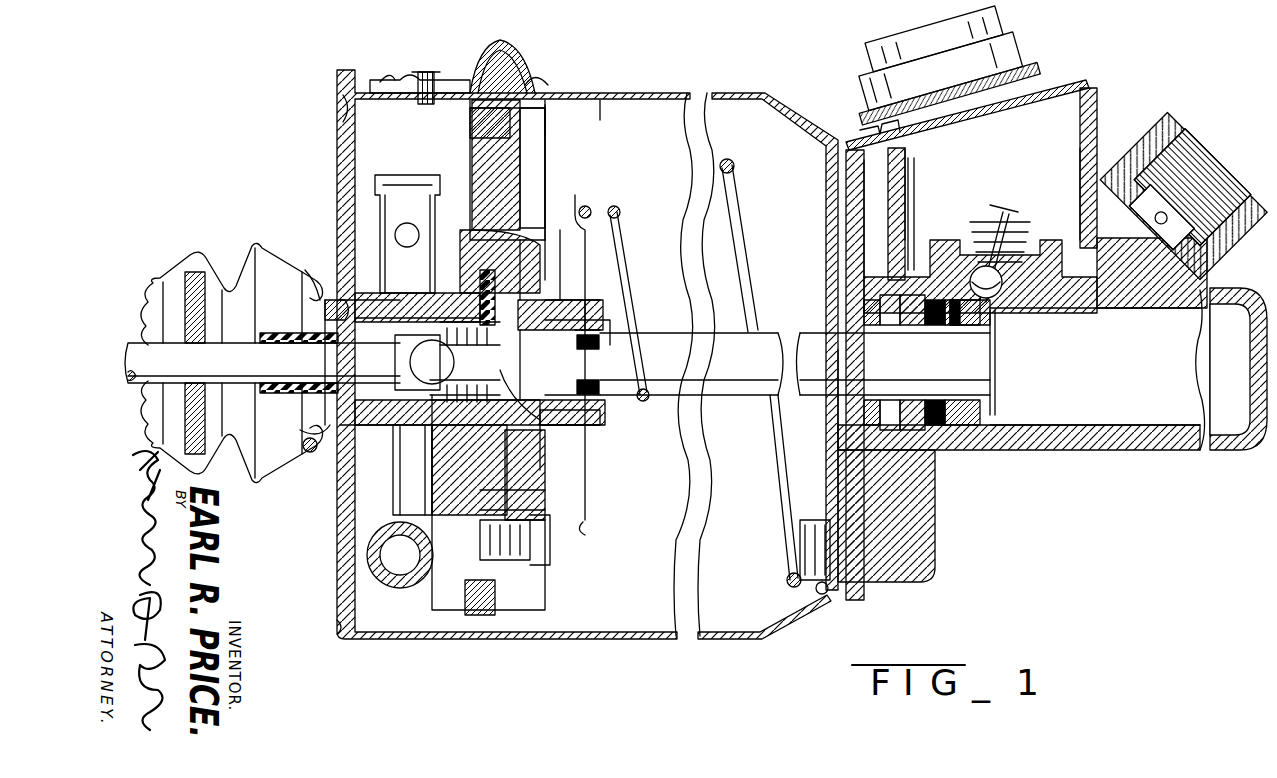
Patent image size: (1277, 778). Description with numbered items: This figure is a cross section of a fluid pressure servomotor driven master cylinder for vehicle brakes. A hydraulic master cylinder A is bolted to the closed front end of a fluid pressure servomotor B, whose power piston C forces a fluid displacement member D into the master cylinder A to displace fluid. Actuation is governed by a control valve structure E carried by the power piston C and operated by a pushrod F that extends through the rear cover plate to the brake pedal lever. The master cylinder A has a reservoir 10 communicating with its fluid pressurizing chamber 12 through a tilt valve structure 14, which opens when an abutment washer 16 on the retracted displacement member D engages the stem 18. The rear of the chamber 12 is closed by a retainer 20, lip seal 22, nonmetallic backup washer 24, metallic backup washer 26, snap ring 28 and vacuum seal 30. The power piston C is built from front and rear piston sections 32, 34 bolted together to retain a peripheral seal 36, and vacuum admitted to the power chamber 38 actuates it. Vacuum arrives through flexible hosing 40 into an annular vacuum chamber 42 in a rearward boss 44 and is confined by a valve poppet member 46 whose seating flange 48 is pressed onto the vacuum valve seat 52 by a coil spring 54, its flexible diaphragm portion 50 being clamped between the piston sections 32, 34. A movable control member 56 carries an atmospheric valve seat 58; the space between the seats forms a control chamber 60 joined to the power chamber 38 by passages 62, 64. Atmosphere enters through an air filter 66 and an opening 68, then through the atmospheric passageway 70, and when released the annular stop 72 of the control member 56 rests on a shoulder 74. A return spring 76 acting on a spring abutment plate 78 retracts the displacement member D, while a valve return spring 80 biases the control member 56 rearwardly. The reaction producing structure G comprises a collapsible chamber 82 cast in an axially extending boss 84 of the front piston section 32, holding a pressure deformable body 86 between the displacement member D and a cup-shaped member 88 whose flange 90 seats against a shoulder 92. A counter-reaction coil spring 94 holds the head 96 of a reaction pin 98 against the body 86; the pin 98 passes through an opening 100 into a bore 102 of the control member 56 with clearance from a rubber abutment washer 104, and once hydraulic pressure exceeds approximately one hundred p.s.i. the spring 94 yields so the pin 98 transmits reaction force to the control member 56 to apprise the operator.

The hydraulic master cylinder A is at (1108, 128).
The fluid pressure servomotor B is at (655, 92).
The power piston C is at (590, 100).
The fluid displacement member D is at (790, 310).
The control valve structure E is at (325, 462).
The pushrod F is at (128, 330).
The reaction producing structure G is at (600, 320).
The reservoir 10 is at (992, 184).
The fluid pressurizing chamber 12 is at (1128, 369).
The tilt valve structure 14 is at (990, 232).
The abutment washer 16 is at (985, 320).
The stem 18 is at (995, 310).
The retainer 20 is at (998, 405).
The lip seal 22 is at (905, 455).
The nonmetallic backup washer 24 is at (900, 465).
The metallic backup washer 26 is at (895, 475).
The snap ring 28 is at (885, 485).
The vacuum seal 30 is at (880, 495).
The front piston section 32 is at (548, 138).
The rear piston section 34 is at (468, 126).
The seal 36 is at (528, 90).
The power chamber 38 is at (632, 118).
The flexible hosing 40 is at (410, 585).
The annular vacuum chamber 42 is at (340, 290).
The boss 44 is at (350, 300).
The annular valve poppet member 46 is at (545, 420).
The seating flange 48 is at (400, 480).
The diaphragm portion 50 is at (545, 430).
The vacuum valve seat 52 is at (425, 215).
The coil spring 54 is at (520, 300).
The movable control member 56 is at (330, 395).
The atmospheric valve seat 58 is at (500, 478).
The control chamber 60 is at (412, 470).
The passage 62 is at (420, 480).
The passage 64 is at (420, 510).
The air filter 66 is at (520, 48).
The opening 68 is at (440, 106).
The atmospheric passageway 70 is at (515, 250).
The annular stop 72 is at (325, 290).
The shoulder 74 is at (320, 318).
The return spring 76 is at (735, 166).
The spring abutment plate 78 is at (560, 235).
The valve return spring 80 is at (545, 300).
The collapsible chamber 82 is at (635, 310).
The axially extending boss 84 is at (615, 290).
The pressure deformable body 86 is at (610, 372).
The cup-shaped member 88 is at (552, 320).
The radially outwardly turned flange 90 is at (580, 320).
The shoulder 92 is at (603, 378).
The counter-reaction coil spring 94 is at (560, 395).
The head 96 is at (600, 349).
The reaction pin 98 is at (577, 419).
The opening 100 is at (505, 395).
The bore 102 is at (504, 297).
The rubber abutment washer 104 is at (417, 318).